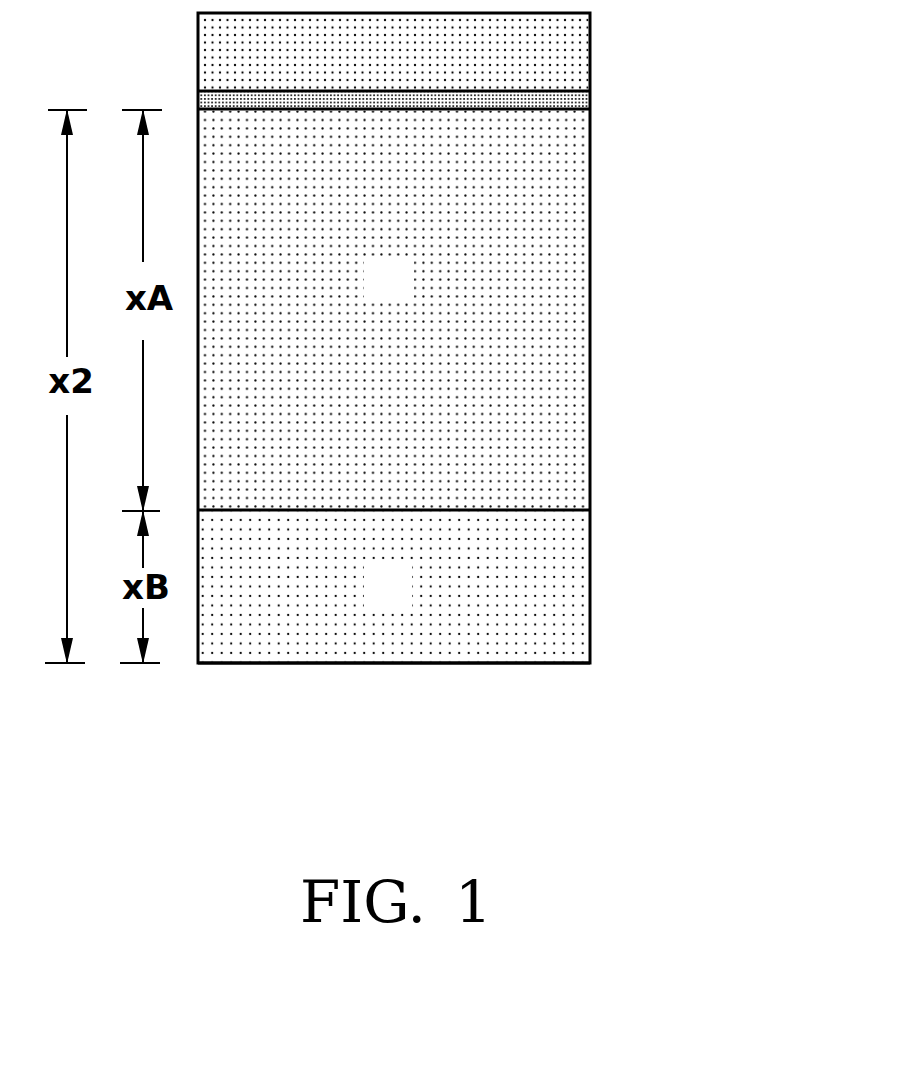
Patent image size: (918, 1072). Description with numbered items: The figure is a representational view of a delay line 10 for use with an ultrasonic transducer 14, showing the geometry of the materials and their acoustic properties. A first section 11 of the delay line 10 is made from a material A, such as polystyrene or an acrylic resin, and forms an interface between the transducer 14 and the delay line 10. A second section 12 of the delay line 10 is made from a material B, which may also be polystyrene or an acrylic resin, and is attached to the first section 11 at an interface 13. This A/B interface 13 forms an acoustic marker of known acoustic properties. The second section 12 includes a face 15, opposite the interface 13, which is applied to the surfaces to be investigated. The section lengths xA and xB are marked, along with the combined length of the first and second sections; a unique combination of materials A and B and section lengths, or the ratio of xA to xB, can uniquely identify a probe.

The delay line 10 is at (590, 357).
The first section 11 is at (493, 262).
The second section 12 is at (533, 593).
The interface 13 is at (427, 509).
The ultrasonic transducer 14 is at (592, 100).
The face 15 is at (385, 665).